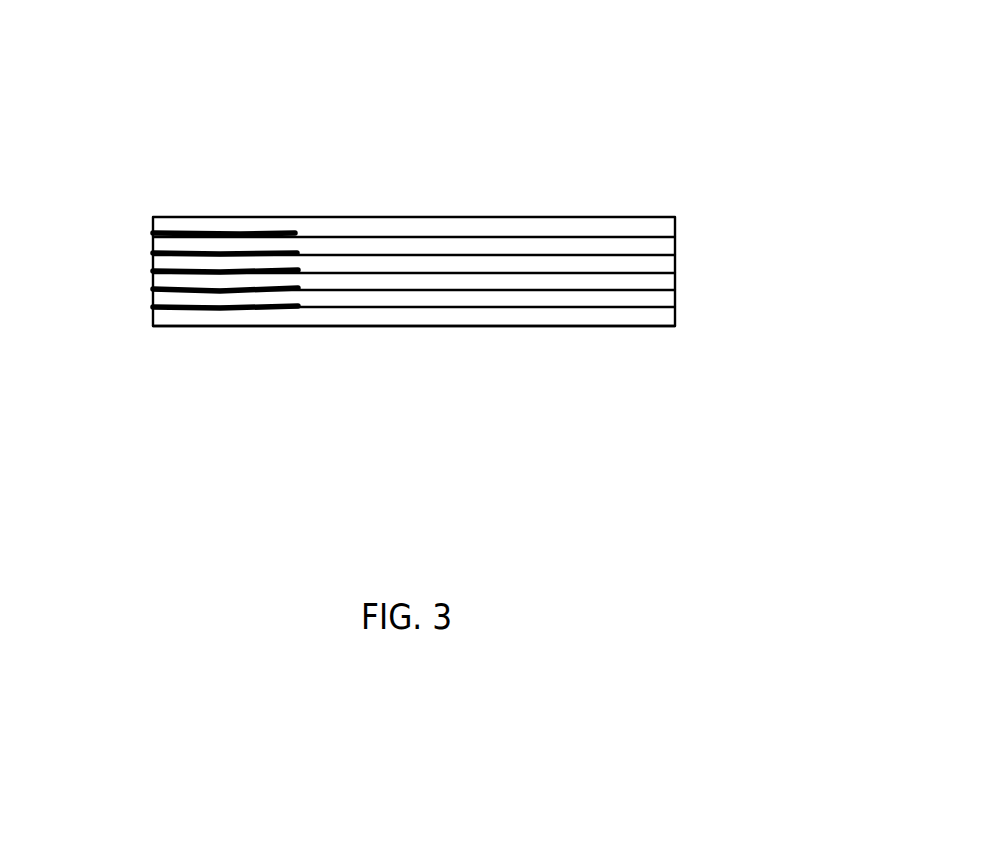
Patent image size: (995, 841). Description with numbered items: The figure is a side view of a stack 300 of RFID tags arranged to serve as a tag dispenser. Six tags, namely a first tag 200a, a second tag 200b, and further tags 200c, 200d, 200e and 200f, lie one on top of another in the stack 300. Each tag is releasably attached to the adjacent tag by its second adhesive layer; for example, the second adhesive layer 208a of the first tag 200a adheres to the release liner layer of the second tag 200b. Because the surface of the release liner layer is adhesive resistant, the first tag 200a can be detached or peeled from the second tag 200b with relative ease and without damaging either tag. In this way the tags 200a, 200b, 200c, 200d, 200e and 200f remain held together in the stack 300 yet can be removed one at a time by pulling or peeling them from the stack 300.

The stack 300 is at (118, 53).
The first tag 200a is at (676, 228).
The second tag 200b is at (676, 248).
The tag 200c is at (676, 260).
The tag 200d is at (676, 280).
The tag 200e is at (676, 300).
The tag 200f is at (676, 318).
The second adhesive layer 208a is at (188, 232).